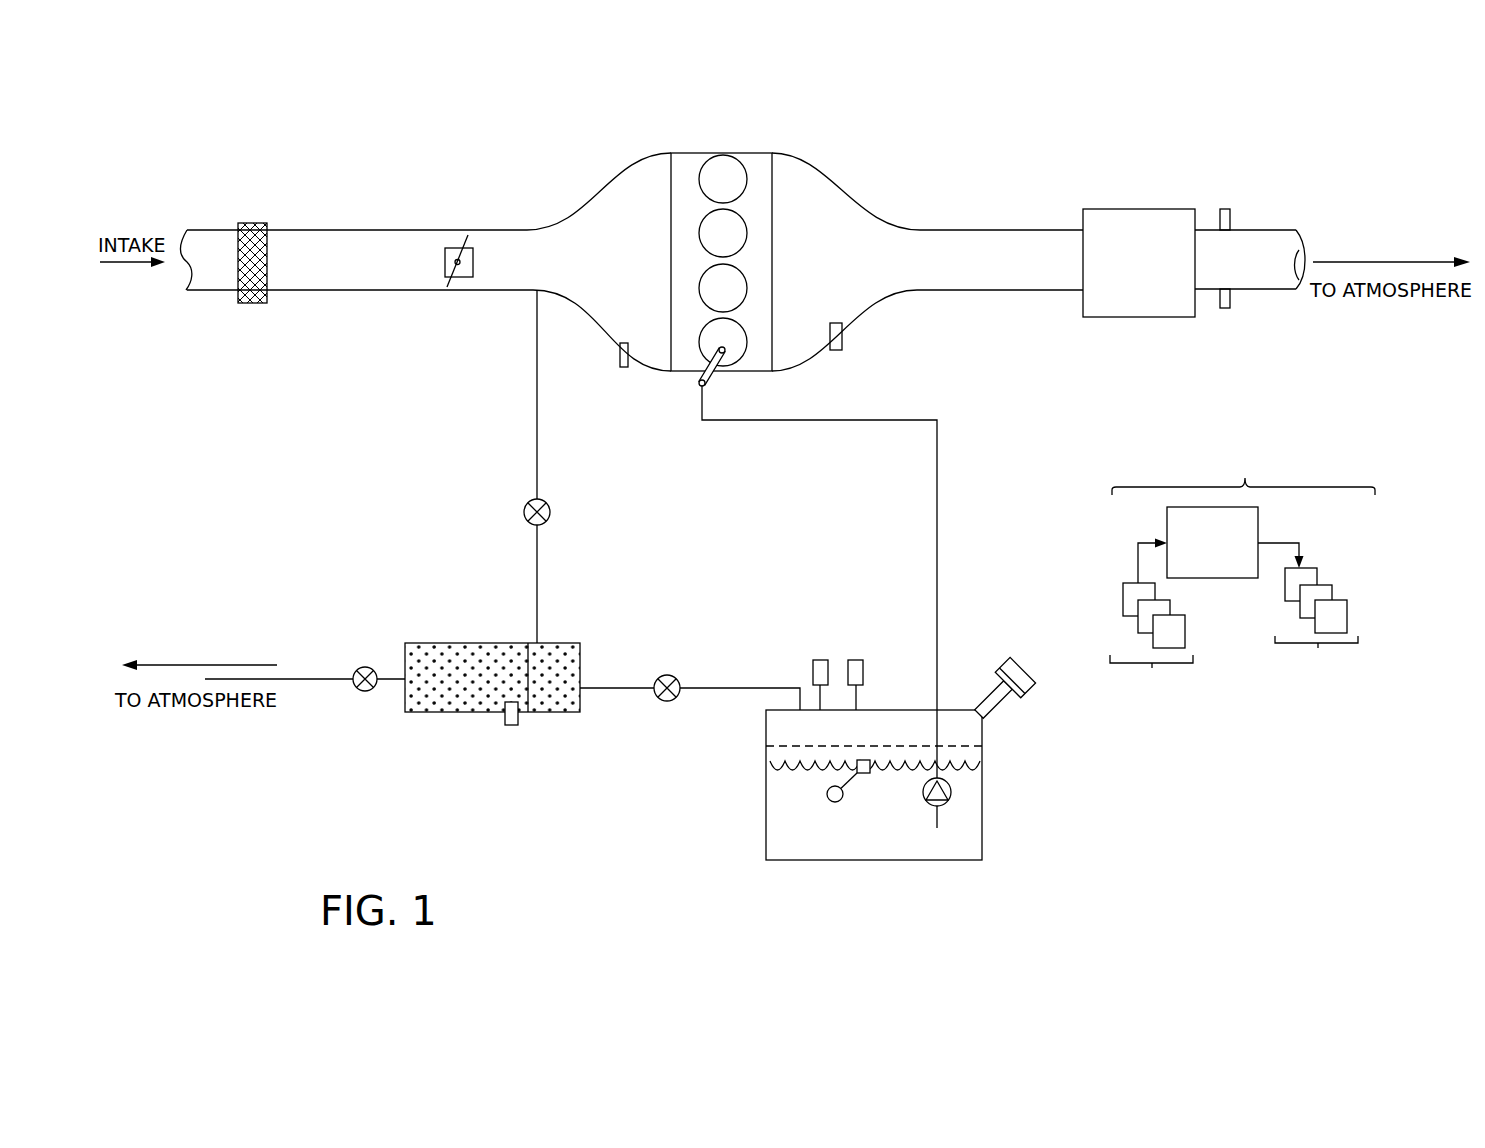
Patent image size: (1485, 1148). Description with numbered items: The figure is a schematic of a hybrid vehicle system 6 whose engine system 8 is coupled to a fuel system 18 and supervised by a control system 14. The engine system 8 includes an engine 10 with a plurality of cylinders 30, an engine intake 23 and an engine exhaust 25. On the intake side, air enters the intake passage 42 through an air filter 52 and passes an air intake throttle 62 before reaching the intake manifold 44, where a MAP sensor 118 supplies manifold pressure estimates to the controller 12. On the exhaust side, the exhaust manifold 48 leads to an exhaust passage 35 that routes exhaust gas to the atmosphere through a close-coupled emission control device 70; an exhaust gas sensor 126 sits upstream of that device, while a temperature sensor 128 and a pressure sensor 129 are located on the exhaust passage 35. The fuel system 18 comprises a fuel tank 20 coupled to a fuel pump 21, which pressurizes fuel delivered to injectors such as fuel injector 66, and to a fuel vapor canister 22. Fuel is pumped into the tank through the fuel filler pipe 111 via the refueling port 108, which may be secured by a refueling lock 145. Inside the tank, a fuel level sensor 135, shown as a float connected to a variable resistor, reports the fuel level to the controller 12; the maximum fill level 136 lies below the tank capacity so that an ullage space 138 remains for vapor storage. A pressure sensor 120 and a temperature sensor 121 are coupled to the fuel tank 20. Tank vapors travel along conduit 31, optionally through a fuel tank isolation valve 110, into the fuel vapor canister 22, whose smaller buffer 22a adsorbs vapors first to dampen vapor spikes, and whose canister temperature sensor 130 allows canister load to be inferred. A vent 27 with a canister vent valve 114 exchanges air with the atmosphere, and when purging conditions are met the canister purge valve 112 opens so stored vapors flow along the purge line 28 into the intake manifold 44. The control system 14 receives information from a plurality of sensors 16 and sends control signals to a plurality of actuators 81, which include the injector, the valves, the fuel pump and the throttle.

The hybrid vehicle system 6 is at (198, 124).
The engine system 8 is at (1341, 120).
The engine 10 is at (736, 262).
The controller 12 is at (1212, 542).
The control system 14 is at (1242, 570).
The sensors 16 is at (1151, 624).
The fuel system 18 is at (1033, 868).
The fuel tank 20 is at (766, 838).
The fuel pump 21 is at (950, 797).
The fuel vapor canister 22 is at (503, 665).
The buffer 22a is at (553, 643).
The engine intake 23 is at (599, 254).
The engine exhaust 25 is at (927, 254).
The vent 27 is at (335, 679).
The purge line 28 is at (537, 470).
The cylinders 30 is at (746, 171).
The conduit 31 is at (722, 688).
The exhaust passage 35 is at (1278, 230).
The intake passage 42 is at (217, 291).
The intake manifold 44 is at (633, 276).
The exhaust manifold 48 is at (854, 276).
The air filter 52 is at (253, 223).
The air intake throttle 62 is at (473, 270).
The fuel injector 66 is at (717, 376).
The emission control device 70 is at (1126, 209).
The actuators 81 is at (1308, 617).
The refueling port 108 is at (1015, 677).
The fuel tank isolation valve 110 is at (665, 675).
The fuel filler pipe 111 is at (994, 695).
The canister purge valve 112 is at (547, 503).
The canister vent valve 114 is at (363, 691).
The MAP sensor 118 is at (618, 348).
The pressure sensor 120 is at (863, 672).
The temperature sensor 121 is at (818, 660).
The exhaust gas sensor 126 is at (842, 331).
The temperature sensor 128 is at (1225, 308).
The pressure sensor 129 is at (1225, 209).
The canister temperature sensor 130 is at (512, 725).
The fuel level sensor 135 is at (829, 800).
The maximum fill level 136 is at (766, 746).
The ullage space 138 is at (882, 739).
The refueling lock 145 is at (1000, 673).